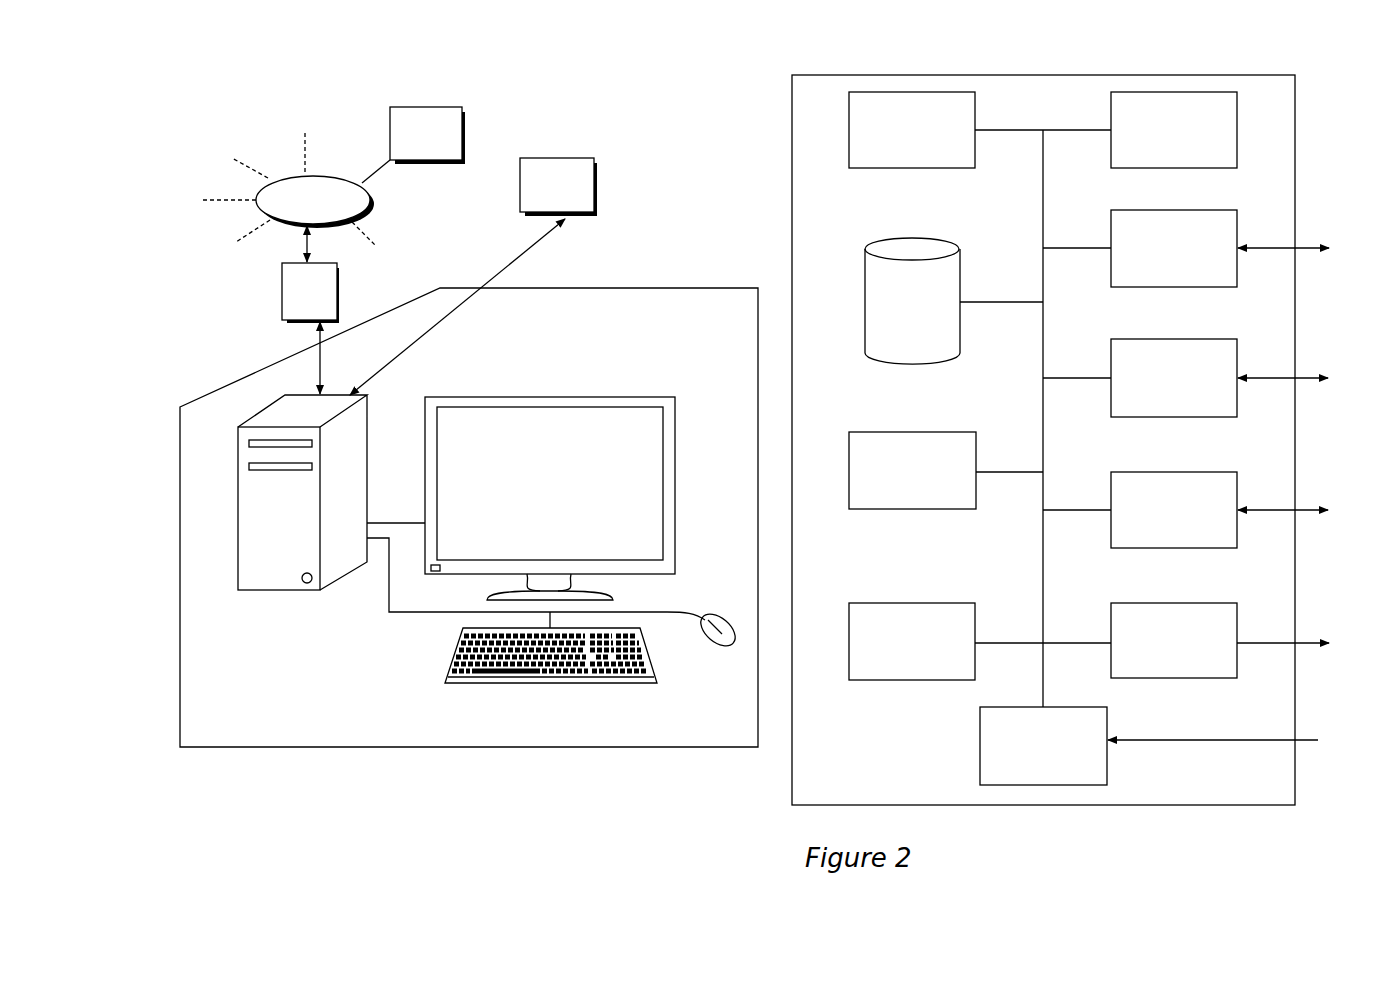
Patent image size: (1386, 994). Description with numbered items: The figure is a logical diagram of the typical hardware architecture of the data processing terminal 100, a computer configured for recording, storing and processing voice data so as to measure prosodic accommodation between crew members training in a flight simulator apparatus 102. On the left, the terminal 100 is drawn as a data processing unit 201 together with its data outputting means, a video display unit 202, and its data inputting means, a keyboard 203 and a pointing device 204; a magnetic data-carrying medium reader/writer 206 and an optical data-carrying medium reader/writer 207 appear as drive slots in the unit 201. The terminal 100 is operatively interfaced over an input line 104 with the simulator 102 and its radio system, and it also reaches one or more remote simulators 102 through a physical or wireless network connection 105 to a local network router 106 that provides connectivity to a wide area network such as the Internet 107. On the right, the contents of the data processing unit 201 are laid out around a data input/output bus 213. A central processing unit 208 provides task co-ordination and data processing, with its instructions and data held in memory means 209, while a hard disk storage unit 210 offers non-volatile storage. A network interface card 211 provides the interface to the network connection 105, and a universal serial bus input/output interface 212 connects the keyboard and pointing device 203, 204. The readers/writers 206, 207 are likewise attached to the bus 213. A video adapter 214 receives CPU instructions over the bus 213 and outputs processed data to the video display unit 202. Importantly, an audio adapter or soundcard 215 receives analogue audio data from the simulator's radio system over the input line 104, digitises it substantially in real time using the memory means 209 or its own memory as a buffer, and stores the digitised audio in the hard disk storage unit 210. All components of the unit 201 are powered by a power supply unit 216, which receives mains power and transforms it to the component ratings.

The data processing terminal 100 is at (633, 722).
The flight simulator apparatus 102 is at (464, 115).
The input line 104 is at (508, 262).
The network connection 105 is at (320, 360).
The network router 106 is at (322, 273).
The Internet 107 is at (355, 203).
The data processing unit 201 is at (283, 562).
The video display unit 202 is at (567, 422).
The keyboard 203 is at (452, 659).
The pointing device 204 is at (725, 635).
The magnetic data-carrying medium reader/writer 206 is at (283, 443).
The optical data-carrying medium reader/writer 207 is at (273, 470).
The central processing unit 208 is at (870, 103).
The memory means 209 is at (1223, 103).
The hard disk storage unit 210 is at (895, 247).
The network interface card 211 is at (1222, 222).
The universal serial bus input/output interface 212 is at (1222, 353).
The data input/output bus 213 is at (1043, 200).
The video adapter 214 is at (1222, 615).
The audio adapter 215 is at (1222, 485).
The power supply unit 216 is at (1000, 748).